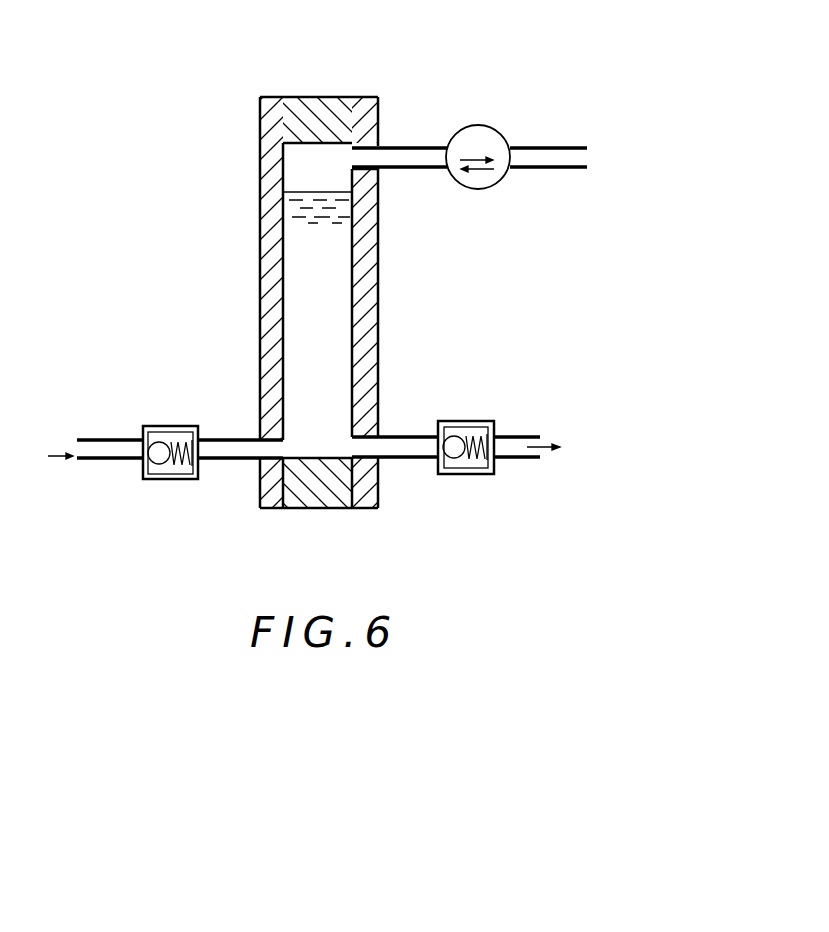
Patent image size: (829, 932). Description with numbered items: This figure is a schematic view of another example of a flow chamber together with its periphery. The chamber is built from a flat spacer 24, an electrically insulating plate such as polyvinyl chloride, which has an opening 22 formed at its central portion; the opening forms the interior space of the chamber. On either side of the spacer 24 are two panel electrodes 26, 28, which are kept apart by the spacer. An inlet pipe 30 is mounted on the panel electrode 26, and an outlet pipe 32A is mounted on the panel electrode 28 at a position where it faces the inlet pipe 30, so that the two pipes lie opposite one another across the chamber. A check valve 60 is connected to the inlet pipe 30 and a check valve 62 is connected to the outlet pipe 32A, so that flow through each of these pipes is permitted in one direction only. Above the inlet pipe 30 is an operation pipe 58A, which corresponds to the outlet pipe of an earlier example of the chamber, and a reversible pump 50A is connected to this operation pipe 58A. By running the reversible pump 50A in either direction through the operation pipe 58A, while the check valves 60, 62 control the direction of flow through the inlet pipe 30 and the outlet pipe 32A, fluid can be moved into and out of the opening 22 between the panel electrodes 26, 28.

The opening 22 is at (303, 168).
The flat spacer 24 is at (316, 97).
The panel electrode 26 is at (268, 97).
The panel electrode 28 is at (366, 97).
The inlet pipe 30 is at (231, 440).
The outlet pipe 32A is at (398, 437).
The reversible pump 50A is at (480, 125).
The operation pipe 58A is at (412, 146).
The check valve 60 is at (172, 426).
The check valve 62 is at (470, 421).